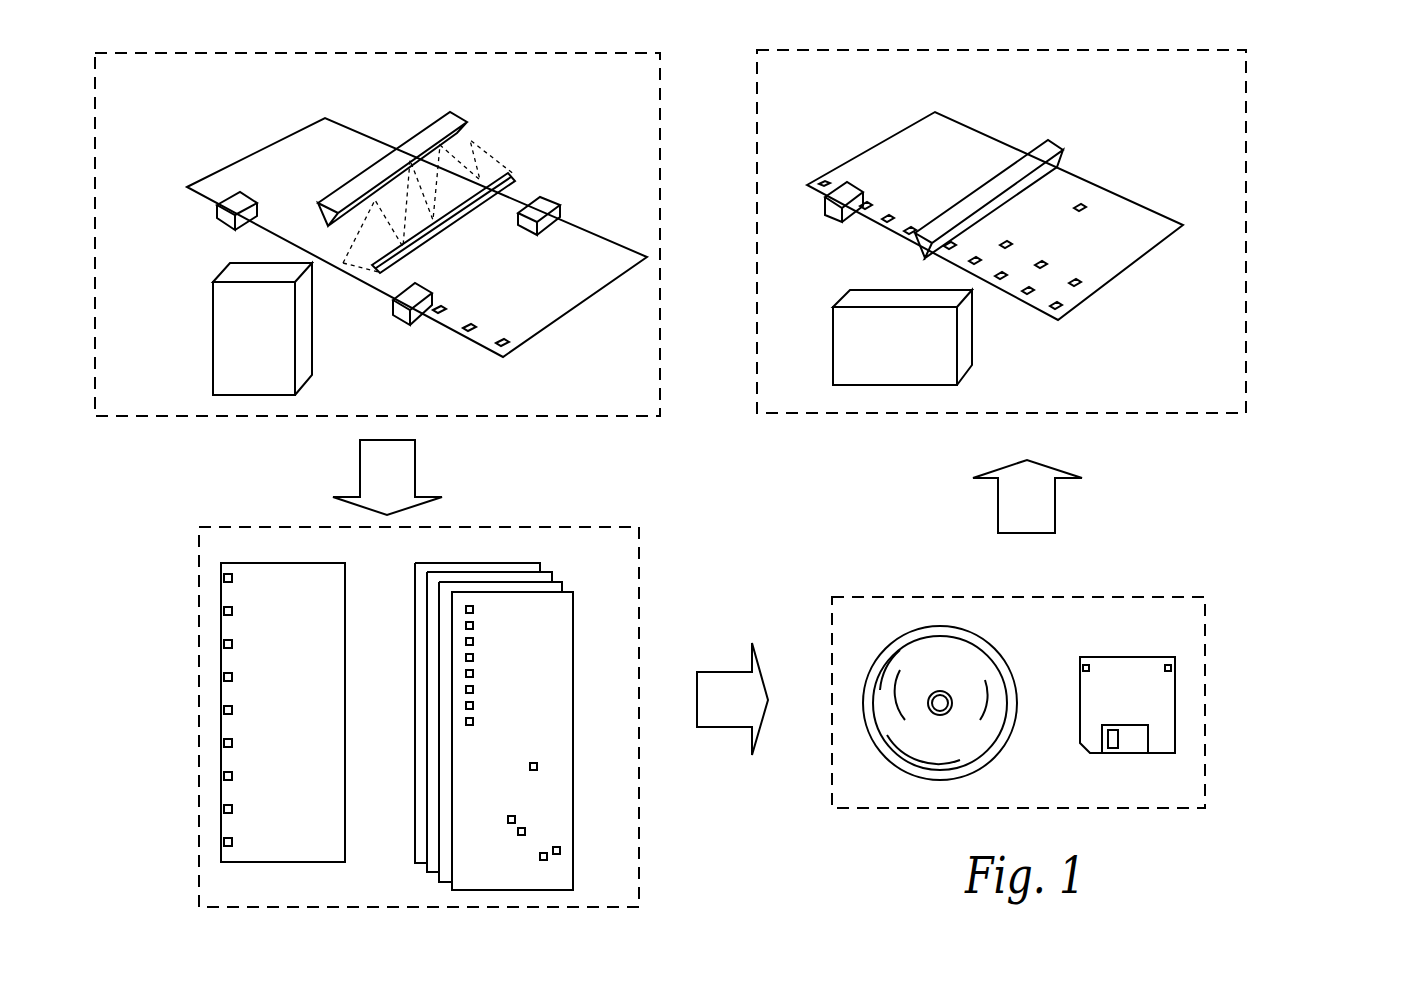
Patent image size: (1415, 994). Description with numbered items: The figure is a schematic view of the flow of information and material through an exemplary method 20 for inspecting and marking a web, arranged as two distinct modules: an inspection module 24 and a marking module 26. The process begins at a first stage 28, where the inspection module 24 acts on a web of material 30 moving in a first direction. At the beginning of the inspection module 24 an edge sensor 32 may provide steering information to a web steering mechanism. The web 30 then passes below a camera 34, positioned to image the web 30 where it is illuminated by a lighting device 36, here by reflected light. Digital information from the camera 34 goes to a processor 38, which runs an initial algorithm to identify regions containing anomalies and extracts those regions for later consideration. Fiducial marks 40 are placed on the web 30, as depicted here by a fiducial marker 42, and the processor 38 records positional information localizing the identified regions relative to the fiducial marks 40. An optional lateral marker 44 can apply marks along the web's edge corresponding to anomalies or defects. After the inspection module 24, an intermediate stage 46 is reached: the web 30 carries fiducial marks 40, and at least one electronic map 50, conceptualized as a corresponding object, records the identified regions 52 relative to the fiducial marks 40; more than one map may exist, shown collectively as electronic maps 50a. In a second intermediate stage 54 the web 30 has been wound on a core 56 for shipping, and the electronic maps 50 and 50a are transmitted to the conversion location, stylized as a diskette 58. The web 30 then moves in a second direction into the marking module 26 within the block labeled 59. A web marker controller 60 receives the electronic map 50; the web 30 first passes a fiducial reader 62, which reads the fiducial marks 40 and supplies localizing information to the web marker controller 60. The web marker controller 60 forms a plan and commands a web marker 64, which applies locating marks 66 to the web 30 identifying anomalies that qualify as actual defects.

The method 20 is at (1327, 92).
The inspection module 24 is at (188, 138).
The marking module 26 is at (850, 108).
The first stage 28 is at (660, 118).
The web of material 30 is at (290, 148).
The edge sensor 32 is at (222, 216).
The camera 34 is at (440, 128).
The lighting device 36 is at (508, 178).
The processor 38 is at (218, 340).
The fiducial marks 40 is at (465, 333).
The fiducial marker 42 is at (398, 315).
The lateral marker 44 is at (545, 200).
The intermediate stage 46 is at (553, 526).
The electronic map 50 is at (568, 647).
The electronic maps 50a is at (543, 553).
The identified regions 52 is at (532, 763).
The second intermediate stage 54 is at (1107, 597).
The core 56 is at (947, 695).
The diskette 58 is at (1117, 665).
The reproduction station block 59 is at (1246, 175).
The web marker controller 60 is at (840, 340).
The fiducial reader 62 is at (833, 208).
The web marker 64 is at (1052, 145).
The locating marks 66 is at (1078, 206).